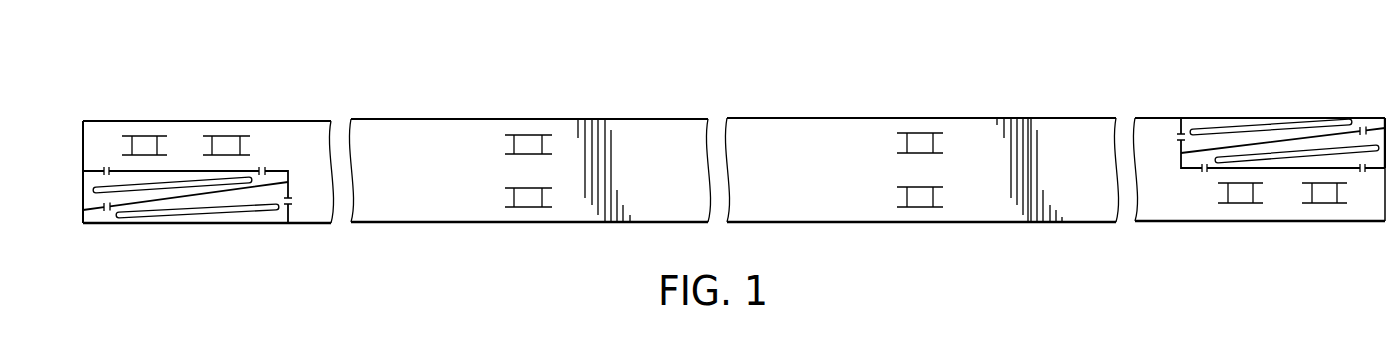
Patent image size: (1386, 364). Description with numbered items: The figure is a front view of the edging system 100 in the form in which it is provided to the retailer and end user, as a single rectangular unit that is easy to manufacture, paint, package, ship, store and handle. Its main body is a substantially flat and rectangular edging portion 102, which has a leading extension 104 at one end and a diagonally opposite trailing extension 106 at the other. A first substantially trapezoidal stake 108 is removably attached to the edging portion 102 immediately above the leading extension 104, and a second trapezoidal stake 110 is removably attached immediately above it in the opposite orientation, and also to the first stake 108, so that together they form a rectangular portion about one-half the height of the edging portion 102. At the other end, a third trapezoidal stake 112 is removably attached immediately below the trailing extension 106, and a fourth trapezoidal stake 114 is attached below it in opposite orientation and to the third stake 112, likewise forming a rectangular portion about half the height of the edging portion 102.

The edging system 100 is at (721, 146).
The edging portion 102 is at (433, 128).
The leading extension 104 is at (1259, 166).
The trailing extension 106 is at (196, 174).
The first stake 108 is at (1287, 166).
The second stake 110 is at (1199, 122).
The third stake 112 is at (87, 183).
The fourth stake 114 is at (267, 218).